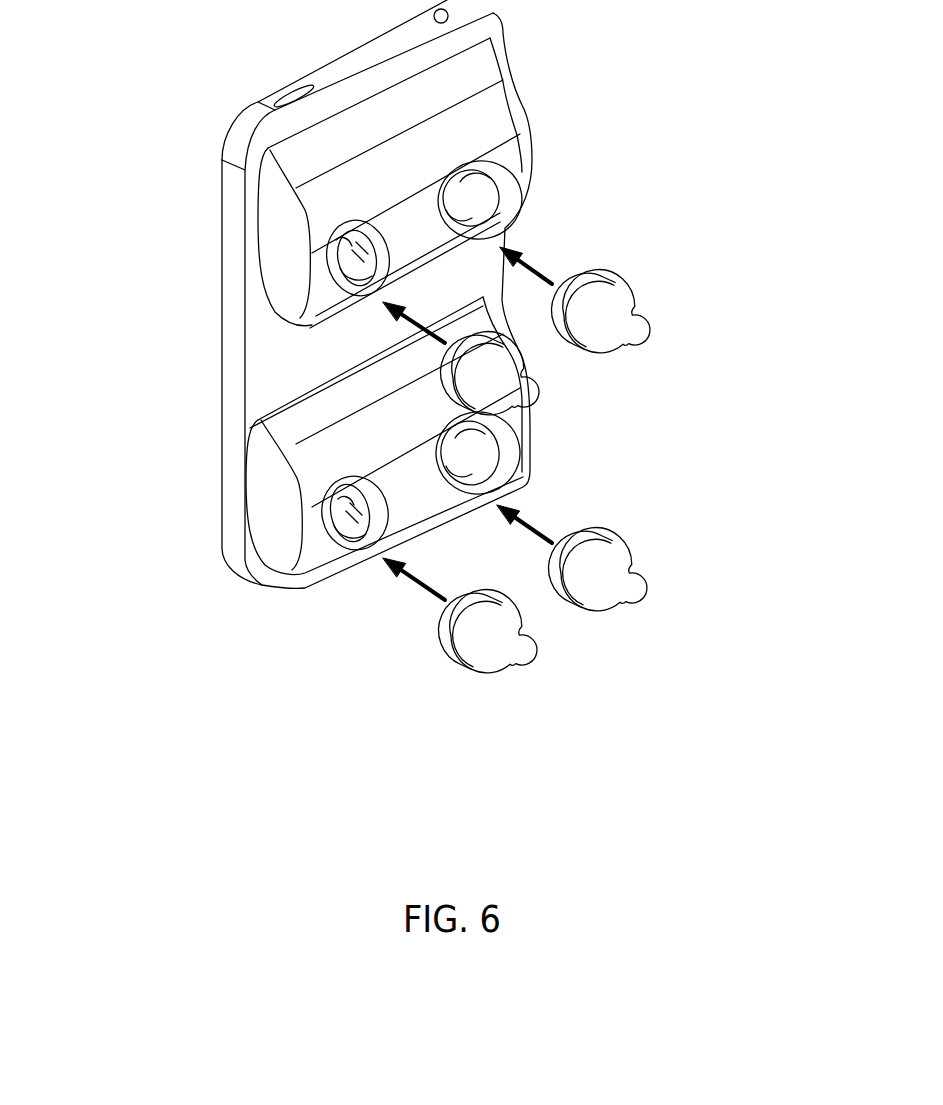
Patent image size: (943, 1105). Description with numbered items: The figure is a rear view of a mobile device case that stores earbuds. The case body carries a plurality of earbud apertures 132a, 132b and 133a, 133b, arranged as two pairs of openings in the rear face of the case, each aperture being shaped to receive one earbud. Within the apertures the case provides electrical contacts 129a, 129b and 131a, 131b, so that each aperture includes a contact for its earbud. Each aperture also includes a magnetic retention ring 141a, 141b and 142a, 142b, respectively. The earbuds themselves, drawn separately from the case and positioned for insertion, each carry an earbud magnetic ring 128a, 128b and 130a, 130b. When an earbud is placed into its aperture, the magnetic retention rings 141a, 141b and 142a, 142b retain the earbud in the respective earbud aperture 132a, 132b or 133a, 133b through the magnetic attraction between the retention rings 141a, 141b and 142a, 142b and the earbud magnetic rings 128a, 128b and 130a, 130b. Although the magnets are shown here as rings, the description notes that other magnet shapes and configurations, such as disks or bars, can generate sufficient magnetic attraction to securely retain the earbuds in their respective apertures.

The earbud magnetic ring 128a is at (450, 633).
The earbud magnetic ring 128b is at (457, 367).
The electrical contact 129a is at (340, 533).
The electrical contact 129b is at (343, 273).
The earbud magnetic ring 130a is at (560, 590).
The earbud magnetic ring 130b is at (457, 215).
The electrical contact 131a is at (460, 473).
The electrical contact 131b is at (597, 283).
The earbud aperture 132a is at (345, 502).
The earbud aperture 132b is at (343, 243).
The earbud aperture 133a is at (450, 447).
The earbud aperture 133b is at (457, 187).
The magnetic retention ring 141a is at (357, 508).
The magnetic retention ring 141b is at (363, 247).
The magnetic retention ring 142a is at (470, 433).
The magnetic retention ring 142b is at (477, 175).